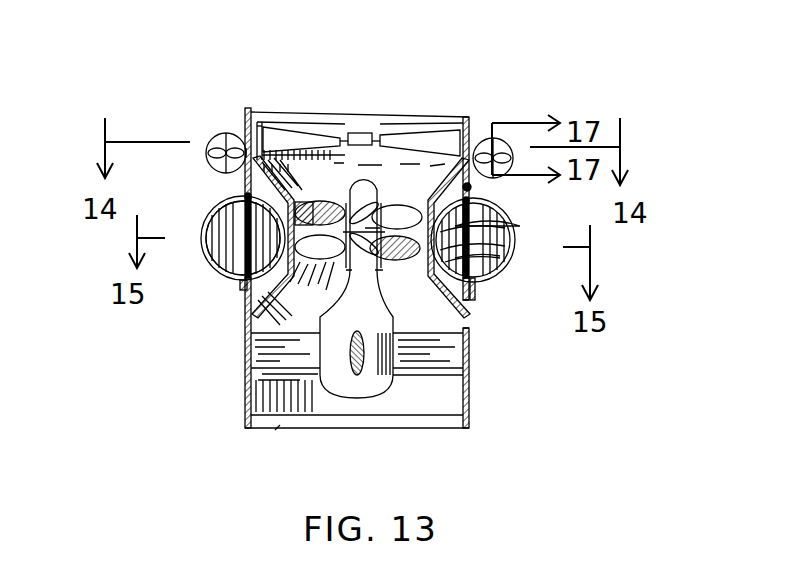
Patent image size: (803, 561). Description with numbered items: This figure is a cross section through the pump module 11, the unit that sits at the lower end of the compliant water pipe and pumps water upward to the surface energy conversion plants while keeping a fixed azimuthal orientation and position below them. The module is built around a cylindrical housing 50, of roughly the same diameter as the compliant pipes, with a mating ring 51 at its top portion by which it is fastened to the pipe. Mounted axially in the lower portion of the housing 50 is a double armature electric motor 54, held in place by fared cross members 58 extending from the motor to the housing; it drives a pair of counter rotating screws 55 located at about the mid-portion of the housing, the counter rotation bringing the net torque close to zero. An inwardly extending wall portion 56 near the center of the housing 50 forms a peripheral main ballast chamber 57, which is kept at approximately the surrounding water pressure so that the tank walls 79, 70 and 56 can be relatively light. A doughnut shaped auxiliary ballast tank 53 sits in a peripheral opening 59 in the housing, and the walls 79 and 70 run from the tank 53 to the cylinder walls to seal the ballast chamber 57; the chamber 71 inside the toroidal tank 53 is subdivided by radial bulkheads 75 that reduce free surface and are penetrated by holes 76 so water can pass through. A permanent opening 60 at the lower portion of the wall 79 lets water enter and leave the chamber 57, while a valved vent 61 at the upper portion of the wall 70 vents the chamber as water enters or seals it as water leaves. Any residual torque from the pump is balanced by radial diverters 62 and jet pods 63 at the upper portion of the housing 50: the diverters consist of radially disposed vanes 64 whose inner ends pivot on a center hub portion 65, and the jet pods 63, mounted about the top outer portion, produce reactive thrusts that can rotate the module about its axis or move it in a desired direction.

The pump module 11 is at (247, 106).
The cylindrical housing 50 is at (243, 357).
The mating ring 51 is at (478, 118).
The auxiliary ballast tank 53 is at (219, 270).
The double armature electric motor 54 is at (335, 382).
The counter rotating screws 55 is at (322, 211).
The inwardly extending wall portion 56 is at (320, 262).
The main ballast chamber 57 is at (247, 303).
The fared cross members 58 is at (437, 370).
The peripheral opening 59 is at (472, 282).
The permanent opening 60 is at (469, 318).
The valved vent 61 is at (472, 190).
The radial diverters 62 is at (370, 102).
The jet pods 63 is at (216, 134).
The vanes 64 is at (282, 126).
The center hub portion 65 is at (366, 131).
The wall 70 is at (246, 190).
The chamber 71 is at (207, 224).
The bulkheads 75 is at (520, 226).
The holes 76 is at (500, 258).
The wall 79 is at (240, 317).